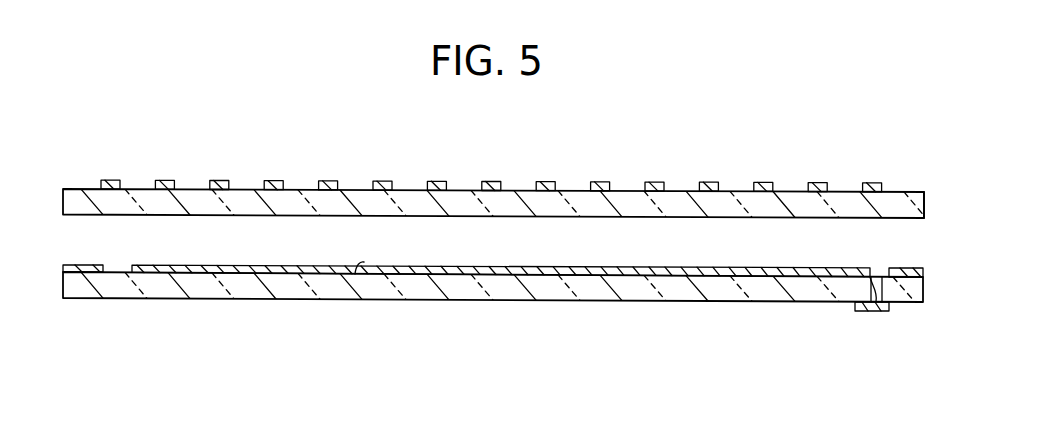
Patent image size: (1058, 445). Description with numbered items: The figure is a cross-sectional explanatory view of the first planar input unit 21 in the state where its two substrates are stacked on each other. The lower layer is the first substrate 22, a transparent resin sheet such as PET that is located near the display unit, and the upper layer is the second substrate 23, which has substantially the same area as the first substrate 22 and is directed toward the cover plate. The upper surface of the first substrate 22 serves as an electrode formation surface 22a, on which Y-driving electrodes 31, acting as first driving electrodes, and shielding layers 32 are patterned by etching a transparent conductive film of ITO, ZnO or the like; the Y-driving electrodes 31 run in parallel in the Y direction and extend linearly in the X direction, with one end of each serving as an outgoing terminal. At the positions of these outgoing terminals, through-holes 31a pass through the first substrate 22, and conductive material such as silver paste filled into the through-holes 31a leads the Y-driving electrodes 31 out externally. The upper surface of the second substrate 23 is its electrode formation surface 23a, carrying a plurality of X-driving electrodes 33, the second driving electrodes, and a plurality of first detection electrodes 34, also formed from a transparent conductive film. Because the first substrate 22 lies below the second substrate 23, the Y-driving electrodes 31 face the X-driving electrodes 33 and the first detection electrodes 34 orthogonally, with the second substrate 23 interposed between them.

The first planar input unit 21 is at (776, 128).
The first substrate 22 is at (185, 300).
The electrode formation surface 22a is at (370, 274).
The second substrate 23 is at (75, 190).
The electrode formation surface 23a is at (902, 192).
The Y-driving electrodes 31 is at (579, 275).
The through-holes 31a is at (873, 311).
The shielding layers 32 is at (96, 265).
The X-driving electrodes 33 is at (257, 180).
The first detection electrodes 34 is at (227, 180).